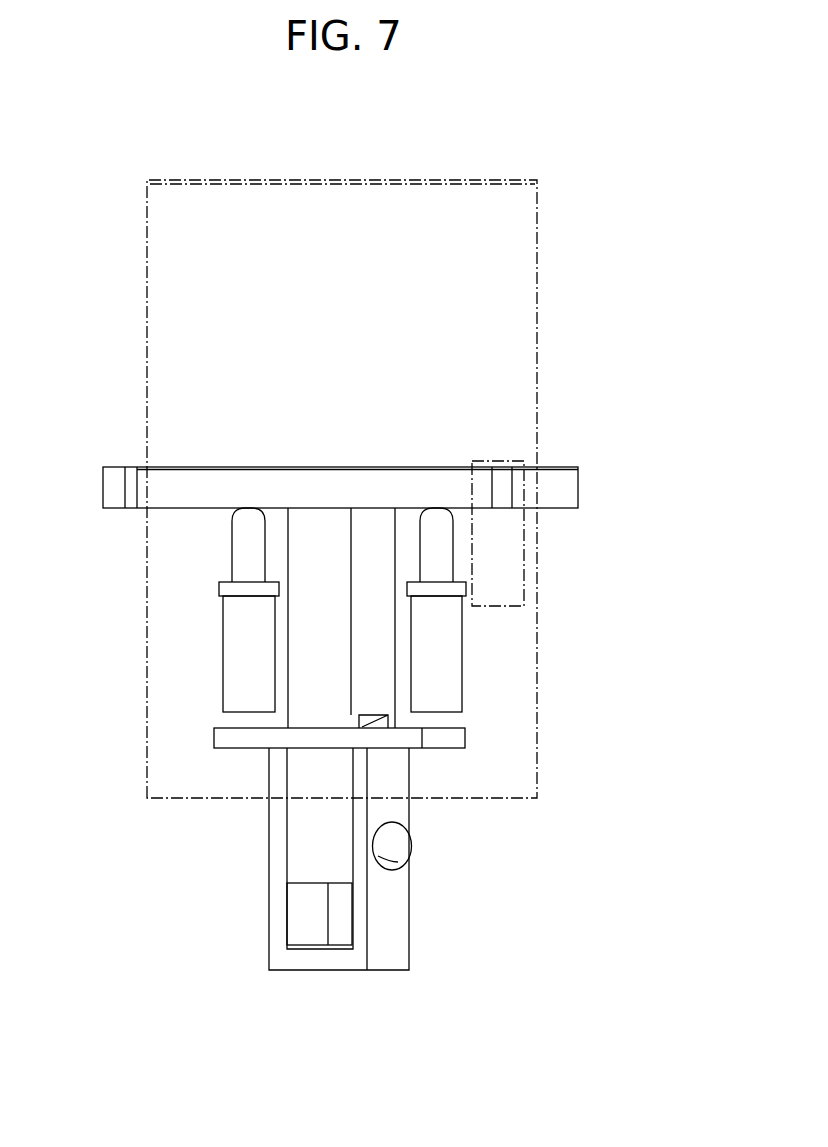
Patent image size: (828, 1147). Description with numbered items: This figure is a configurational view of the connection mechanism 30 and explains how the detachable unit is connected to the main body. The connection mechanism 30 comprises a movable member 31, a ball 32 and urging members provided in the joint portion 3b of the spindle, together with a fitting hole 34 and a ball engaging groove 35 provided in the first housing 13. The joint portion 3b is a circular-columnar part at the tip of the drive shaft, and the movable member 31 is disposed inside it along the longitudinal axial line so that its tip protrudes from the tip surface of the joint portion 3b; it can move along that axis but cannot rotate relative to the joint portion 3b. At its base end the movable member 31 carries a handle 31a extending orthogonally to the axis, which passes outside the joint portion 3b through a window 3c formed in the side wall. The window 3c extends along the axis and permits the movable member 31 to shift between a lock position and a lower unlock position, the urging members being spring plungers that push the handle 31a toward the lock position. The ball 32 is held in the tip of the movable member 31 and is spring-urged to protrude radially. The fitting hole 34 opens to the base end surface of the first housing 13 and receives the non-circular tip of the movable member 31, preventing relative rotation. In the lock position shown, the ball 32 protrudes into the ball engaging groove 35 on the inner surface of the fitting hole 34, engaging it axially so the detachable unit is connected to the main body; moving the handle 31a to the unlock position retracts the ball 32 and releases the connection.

The joint portion 3b is at (537, 262).
The window 3c is at (510, 563).
The connection mechanism 30 is at (377, 668).
The movable member 31 is at (311, 534).
The handle 31a is at (578, 481).
The first housing 13 is at (359, 859).
The ball 32 is at (411, 845).
The fitting hole 34 is at (297, 905).
The ball engaging groove 35 is at (380, 857).